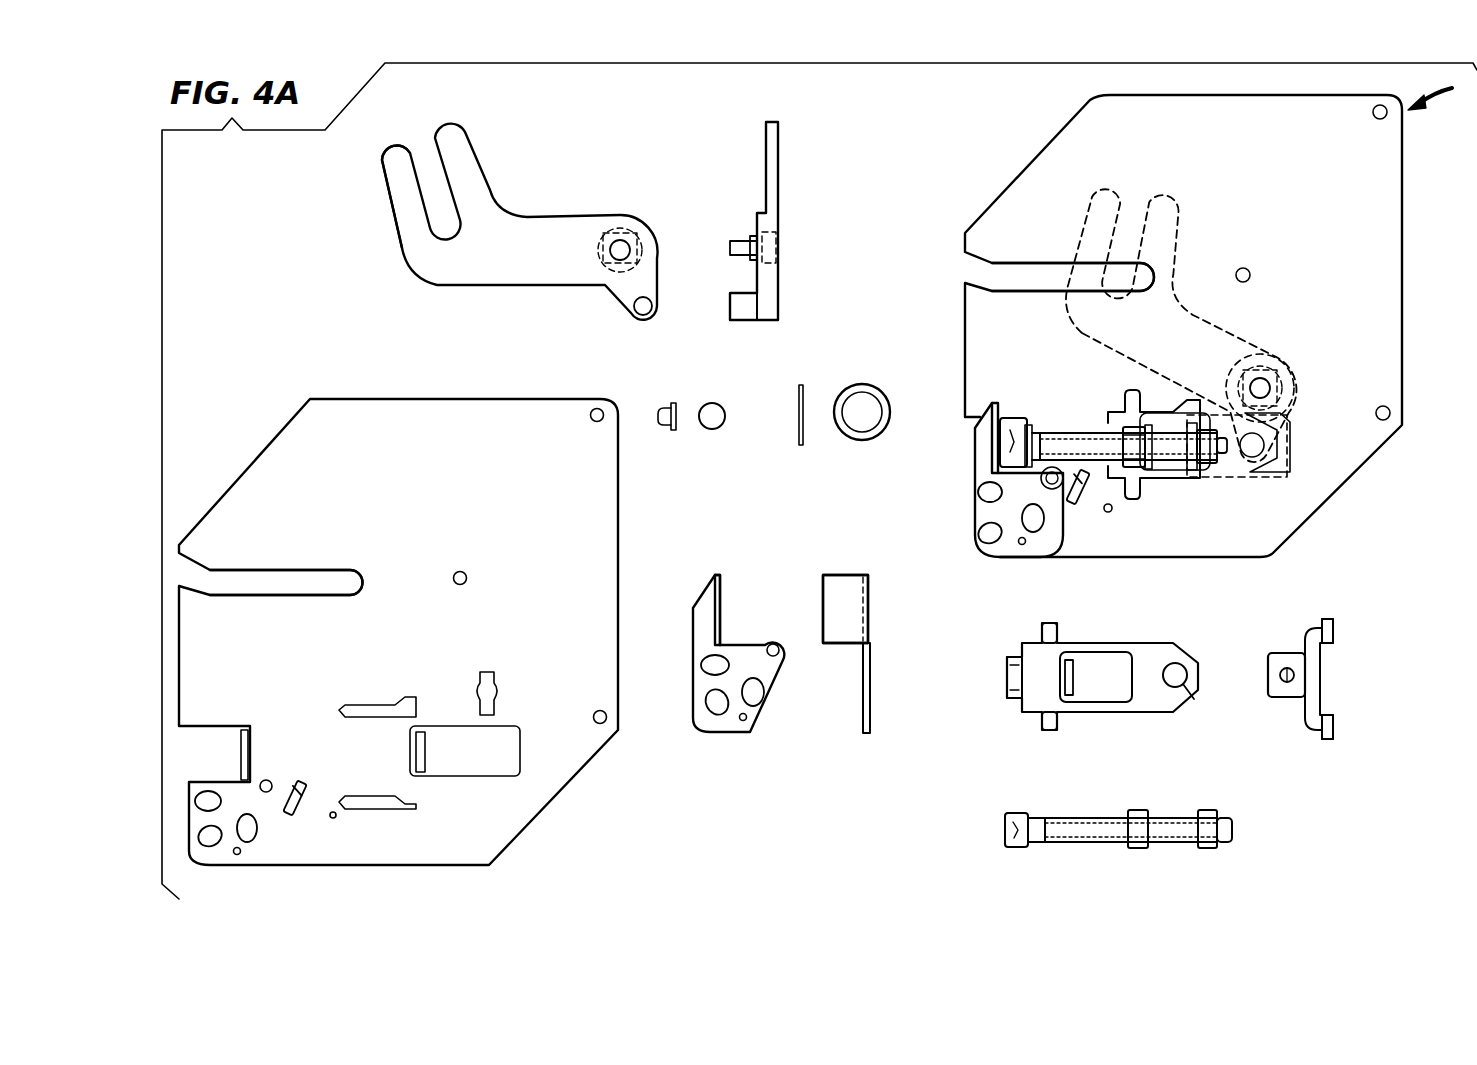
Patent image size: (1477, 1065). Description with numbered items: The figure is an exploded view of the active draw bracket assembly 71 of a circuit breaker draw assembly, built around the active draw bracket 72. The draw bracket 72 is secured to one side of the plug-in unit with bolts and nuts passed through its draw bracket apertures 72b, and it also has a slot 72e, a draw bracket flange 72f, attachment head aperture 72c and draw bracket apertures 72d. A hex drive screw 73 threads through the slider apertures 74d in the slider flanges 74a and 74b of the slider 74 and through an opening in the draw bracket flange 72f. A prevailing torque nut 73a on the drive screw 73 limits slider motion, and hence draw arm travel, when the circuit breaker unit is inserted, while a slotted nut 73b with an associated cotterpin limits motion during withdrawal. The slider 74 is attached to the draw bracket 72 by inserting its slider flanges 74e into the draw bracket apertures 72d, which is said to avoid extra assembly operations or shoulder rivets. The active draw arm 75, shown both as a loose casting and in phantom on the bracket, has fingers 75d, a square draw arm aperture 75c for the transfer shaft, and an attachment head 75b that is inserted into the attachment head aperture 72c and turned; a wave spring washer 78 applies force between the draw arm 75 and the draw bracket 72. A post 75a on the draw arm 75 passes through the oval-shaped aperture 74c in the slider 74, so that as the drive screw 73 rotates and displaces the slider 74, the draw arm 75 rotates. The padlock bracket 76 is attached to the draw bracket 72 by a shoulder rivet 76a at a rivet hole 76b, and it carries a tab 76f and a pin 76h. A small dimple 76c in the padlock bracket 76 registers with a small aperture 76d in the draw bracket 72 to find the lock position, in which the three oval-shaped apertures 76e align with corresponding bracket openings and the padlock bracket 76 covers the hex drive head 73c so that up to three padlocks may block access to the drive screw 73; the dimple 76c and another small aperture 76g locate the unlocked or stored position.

The active draw bracket assembly 71 is at (1442, 93).
The active draw bracket 72 is at (790, 463).
The draw bracket apertures 72b is at (593, 422).
The attachment head aperture 72c is at (487, 672).
The draw bracket apertures 72d is at (403, 697).
The slot 72e is at (265, 597).
The draw bracket flange 72f is at (422, 770).
The hex drive screw 73 is at (1100, 640).
The prevailing torque nut 73a is at (1138, 850).
The slotted nut 73b is at (1210, 850).
The hex drive head 73c is at (1003, 828).
The slider 74 is at (1165, 569).
The slider flange 74a is at (1290, 655).
The slider flange 74b is at (1006, 660).
The oval-shaped aperture 74c is at (1185, 690).
The slider apertures 74d is at (1006, 685).
The slider flanges 74e is at (1058, 628).
The active draw arm 75 is at (867, 282).
The post 75a is at (744, 310).
The attachment head 75b is at (730, 247).
The draw arm aperture 75c is at (628, 268).
The finger 75d is at (398, 165).
The padlock bracket 76 is at (679, 652).
The shoulder rivet 76a is at (710, 428).
The rivet hole 76b is at (268, 780).
The small dimple 76c is at (744, 720).
The small aperture 76d is at (238, 855).
The oval-shaped apertures 76e is at (705, 703).
The bracket tab 76f is at (720, 605).
The small aperture 76g is at (1110, 512).
The pin 76h is at (1078, 500).
The wave spring washer 78 is at (846, 430).